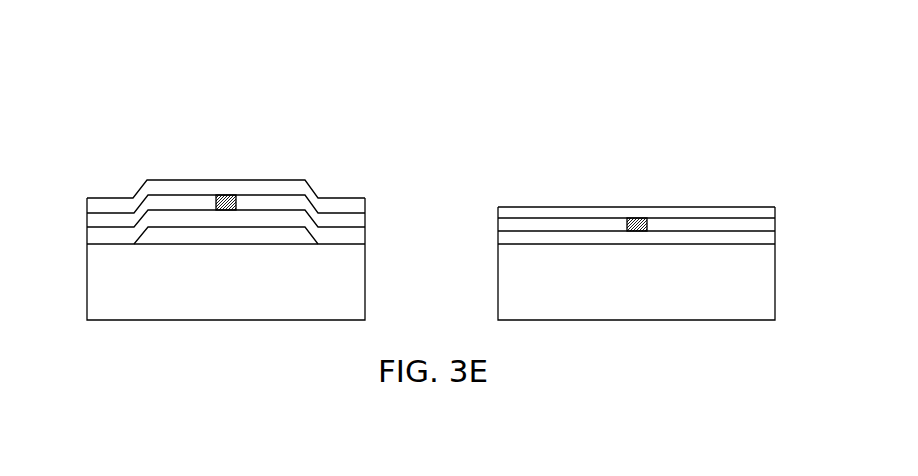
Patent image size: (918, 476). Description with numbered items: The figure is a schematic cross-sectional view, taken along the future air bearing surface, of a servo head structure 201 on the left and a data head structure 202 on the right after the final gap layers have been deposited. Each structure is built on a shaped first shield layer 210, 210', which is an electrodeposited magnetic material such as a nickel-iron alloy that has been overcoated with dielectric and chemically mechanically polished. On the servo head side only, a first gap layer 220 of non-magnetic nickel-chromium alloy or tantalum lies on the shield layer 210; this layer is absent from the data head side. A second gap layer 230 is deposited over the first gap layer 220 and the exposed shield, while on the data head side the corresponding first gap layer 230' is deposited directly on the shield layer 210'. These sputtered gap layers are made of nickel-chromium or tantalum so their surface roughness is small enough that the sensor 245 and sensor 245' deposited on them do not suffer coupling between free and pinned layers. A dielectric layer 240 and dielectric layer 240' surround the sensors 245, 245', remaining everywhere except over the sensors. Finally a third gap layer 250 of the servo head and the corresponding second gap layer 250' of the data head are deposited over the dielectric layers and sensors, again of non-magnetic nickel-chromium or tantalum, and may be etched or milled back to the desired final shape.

The servo head structure 201 is at (133, 80).
The data head structure 202 is at (726, 80).
The first shield layer 210 is at (226, 268).
The first shield layer 210' is at (636, 268).
The first gap layer 220 is at (153, 237).
The second gap layer 230 is at (255, 228).
The first gap layer 230' is at (662, 255).
The dielectric layer 240 is at (247, 196).
The dielectric layer 240' is at (659, 207).
The sensor 245 is at (197, 179).
The sensor 245' is at (604, 201).
The third gap layer 250 is at (226, 172).
The second gap layer 250' is at (636, 184).